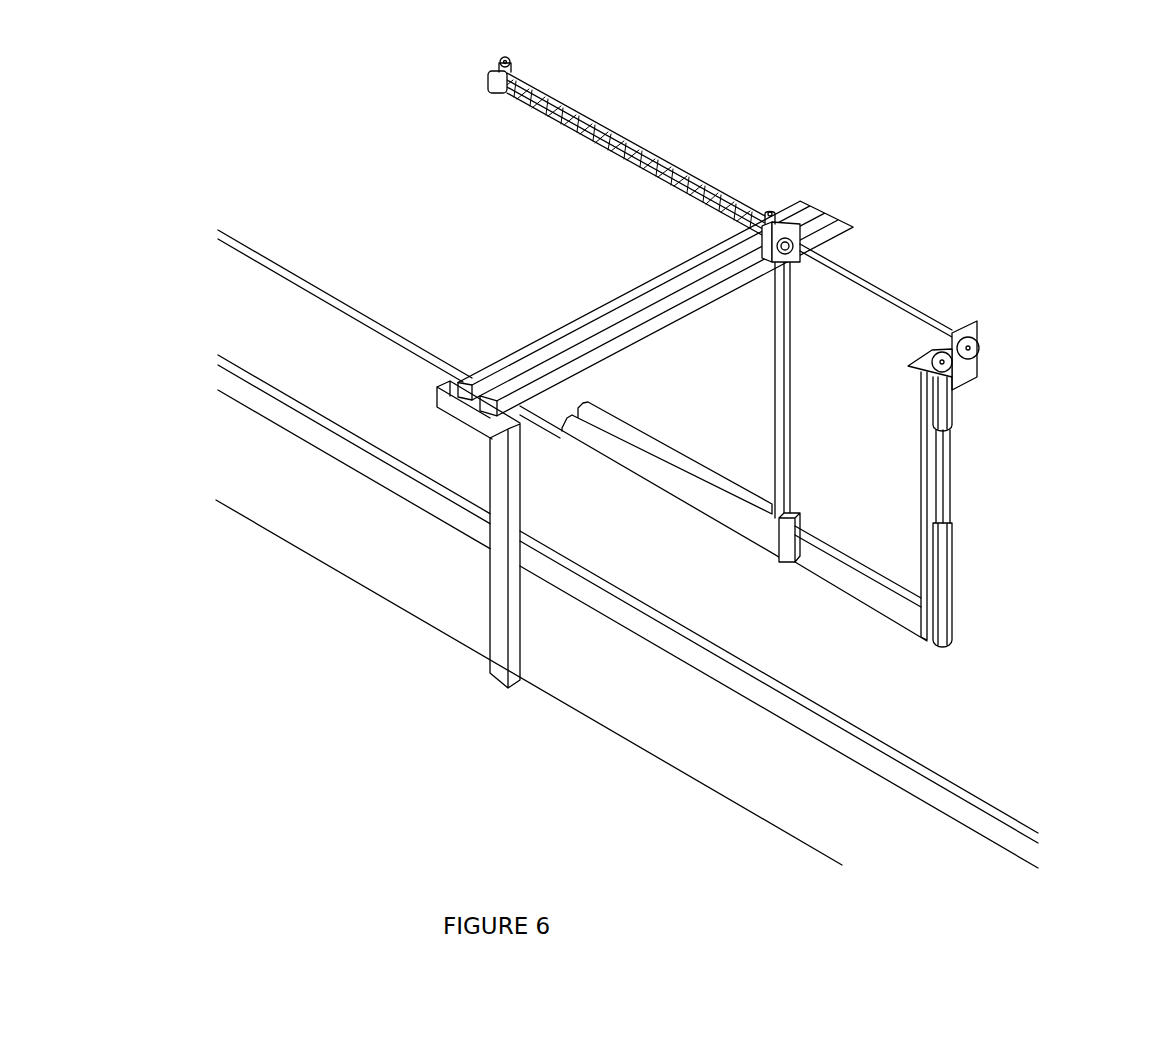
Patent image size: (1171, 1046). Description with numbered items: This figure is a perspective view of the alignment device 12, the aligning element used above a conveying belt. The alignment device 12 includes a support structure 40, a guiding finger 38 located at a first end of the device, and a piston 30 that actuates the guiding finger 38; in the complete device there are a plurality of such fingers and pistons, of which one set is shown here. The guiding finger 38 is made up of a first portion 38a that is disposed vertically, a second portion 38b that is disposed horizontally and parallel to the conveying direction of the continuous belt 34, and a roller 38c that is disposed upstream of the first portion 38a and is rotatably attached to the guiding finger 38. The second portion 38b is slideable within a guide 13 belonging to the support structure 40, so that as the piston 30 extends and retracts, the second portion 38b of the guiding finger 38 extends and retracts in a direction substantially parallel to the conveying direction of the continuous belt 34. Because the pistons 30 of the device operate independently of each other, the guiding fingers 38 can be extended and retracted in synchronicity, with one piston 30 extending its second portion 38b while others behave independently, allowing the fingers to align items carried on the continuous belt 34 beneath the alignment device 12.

The alignment device 12 is at (447, 158).
The guide 13 is at (710, 500).
The piston 30 is at (882, 282).
The continuous belt 34 is at (715, 757).
The guiding finger 38 is at (963, 538).
The first portion 38a is at (920, 421).
The second portion 38b is at (848, 552).
The roller 38c is at (953, 597).
The support structure 40 is at (500, 503).